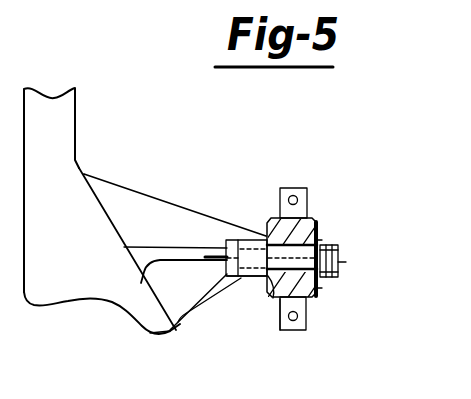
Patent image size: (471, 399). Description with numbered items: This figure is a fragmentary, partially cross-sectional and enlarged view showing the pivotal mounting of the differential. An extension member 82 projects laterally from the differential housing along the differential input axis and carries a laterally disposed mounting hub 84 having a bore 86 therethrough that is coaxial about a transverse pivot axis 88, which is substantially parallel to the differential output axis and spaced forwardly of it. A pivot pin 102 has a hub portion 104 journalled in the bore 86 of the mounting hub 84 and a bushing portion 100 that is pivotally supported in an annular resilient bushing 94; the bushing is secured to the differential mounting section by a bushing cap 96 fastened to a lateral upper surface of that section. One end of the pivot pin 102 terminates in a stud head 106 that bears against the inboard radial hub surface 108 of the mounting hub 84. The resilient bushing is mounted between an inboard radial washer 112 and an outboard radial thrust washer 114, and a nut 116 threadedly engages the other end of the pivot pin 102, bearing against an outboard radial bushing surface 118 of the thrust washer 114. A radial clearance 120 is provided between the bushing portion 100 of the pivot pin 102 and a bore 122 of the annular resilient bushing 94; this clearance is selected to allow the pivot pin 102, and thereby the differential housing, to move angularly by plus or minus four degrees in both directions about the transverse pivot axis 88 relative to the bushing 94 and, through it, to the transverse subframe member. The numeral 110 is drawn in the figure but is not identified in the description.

The extension member 82 is at (117, 195).
The mounting hub 84 is at (251, 277).
The bore 86 is at (263, 239).
The transverse pivot axis 88 is at (333, 262).
The annular resilient bushing 94 is at (312, 299).
The bushing cap 96 is at (308, 314).
The bushing portion 100 is at (335, 258).
The pivot pin 102 is at (303, 192).
The hub portion 104 is at (254, 239).
The stud head 106 is at (221, 264).
The inboard radial hub surface 108 is at (168, 318).
The arm lower edge 110 is at (266, 280).
The inboard radial washer 112 is at (268, 230).
The outboard radial thrust washer 114 is at (318, 286).
The nut 116 is at (330, 270).
The outboard radial bushing surface 118 is at (325, 233).
The radial clearance 120 is at (276, 300).
The bore 122 is at (326, 242).